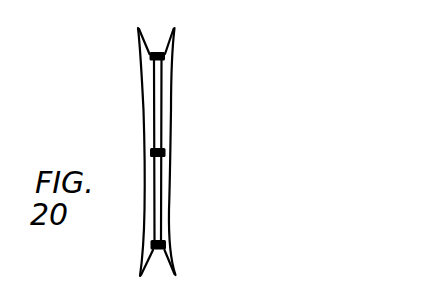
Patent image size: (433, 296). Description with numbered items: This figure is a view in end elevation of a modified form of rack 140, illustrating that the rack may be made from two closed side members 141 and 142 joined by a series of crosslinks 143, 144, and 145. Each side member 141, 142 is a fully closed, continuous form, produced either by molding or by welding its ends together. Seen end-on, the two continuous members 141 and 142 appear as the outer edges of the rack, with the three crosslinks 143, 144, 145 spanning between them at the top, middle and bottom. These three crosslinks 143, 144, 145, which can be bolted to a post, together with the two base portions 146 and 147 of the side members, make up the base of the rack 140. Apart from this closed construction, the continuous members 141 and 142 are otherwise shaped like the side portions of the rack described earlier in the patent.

The rack 140 is at (241, 114).
The closed side member 141 is at (150, 55).
The closed side member 142 is at (172, 48).
The crosslink 143 is at (166, 57).
The crosslink 144 is at (166, 151).
The crosslink 145 is at (166, 243).
The base portion 146 is at (143, 105).
The base portion 147 is at (161, 123).